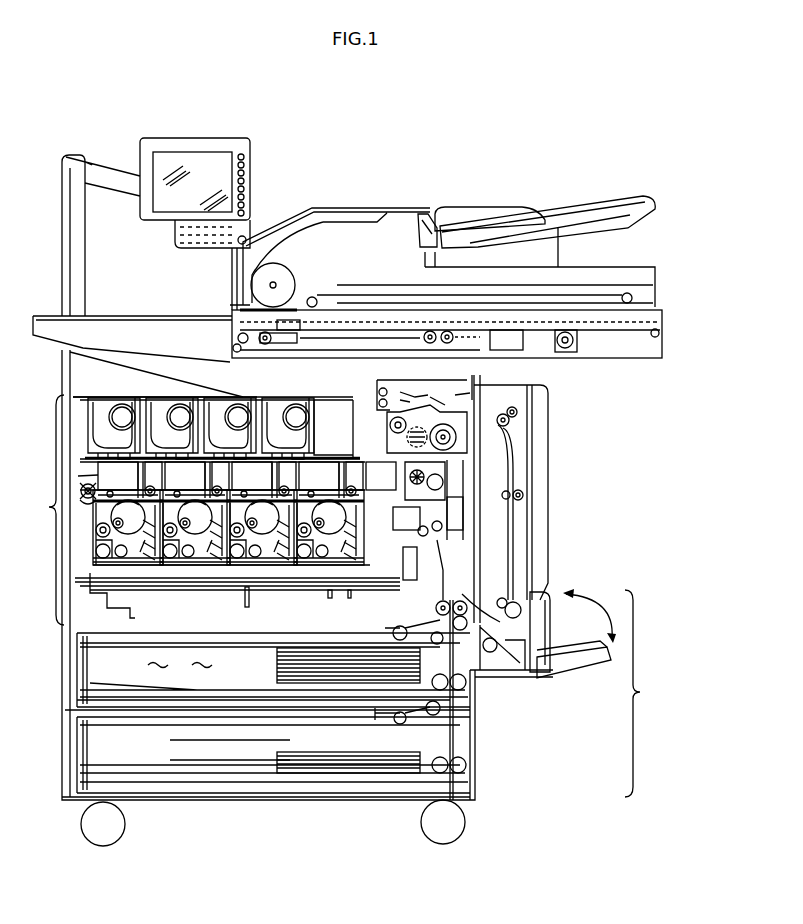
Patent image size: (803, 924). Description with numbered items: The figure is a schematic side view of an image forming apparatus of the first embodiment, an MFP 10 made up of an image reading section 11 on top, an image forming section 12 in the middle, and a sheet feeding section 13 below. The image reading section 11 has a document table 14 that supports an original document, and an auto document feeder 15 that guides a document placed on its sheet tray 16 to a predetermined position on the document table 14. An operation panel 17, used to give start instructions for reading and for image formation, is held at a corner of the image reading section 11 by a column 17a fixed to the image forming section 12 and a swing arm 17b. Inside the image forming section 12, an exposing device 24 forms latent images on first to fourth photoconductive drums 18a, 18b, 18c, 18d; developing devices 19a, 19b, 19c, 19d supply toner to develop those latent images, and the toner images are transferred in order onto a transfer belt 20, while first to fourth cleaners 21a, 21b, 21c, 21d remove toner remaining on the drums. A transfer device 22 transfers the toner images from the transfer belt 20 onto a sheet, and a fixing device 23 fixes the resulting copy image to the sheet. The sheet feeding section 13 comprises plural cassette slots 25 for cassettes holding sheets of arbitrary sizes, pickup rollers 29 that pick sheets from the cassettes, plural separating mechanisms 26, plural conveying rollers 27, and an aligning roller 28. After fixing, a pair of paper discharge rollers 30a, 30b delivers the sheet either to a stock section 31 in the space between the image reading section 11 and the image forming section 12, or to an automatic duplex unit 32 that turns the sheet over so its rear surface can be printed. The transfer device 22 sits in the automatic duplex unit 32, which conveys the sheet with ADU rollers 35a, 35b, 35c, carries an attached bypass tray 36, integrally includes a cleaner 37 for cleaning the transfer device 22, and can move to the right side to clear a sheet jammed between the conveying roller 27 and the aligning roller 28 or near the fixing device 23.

The MFP 10 is at (582, 447).
The image reading section 11 is at (674, 330).
The image forming section 12 is at (39, 510).
The sheet feeding section 13 is at (568, 693).
The document table 14 is at (388, 310).
The auto document feeder 15 is at (472, 190).
The sheet tray 16 is at (603, 218).
The operation panel 17 is at (252, 160).
The column 17a is at (87, 262).
The swing arm 17b is at (101, 170).
The first photoconductive drum 18a is at (330, 535).
The second photoconductive drum 18b is at (262, 535).
The third photoconductive drum 18c is at (198, 535).
The fourth photoconductive drum 18d is at (130, 535).
The developing device 19a is at (306, 545).
The developing device 19b is at (240, 540).
The developing device 19c is at (178, 540).
The developing device 19d is at (117, 540).
The transfer belt 20 is at (434, 476).
The first cleaner 21a is at (366, 515).
The second cleaner 21b is at (331, 476).
The third cleaner 21c is at (264, 476).
The fourth cleaner 21d is at (197, 476).
The transfer device 22 is at (97, 491).
The fixing device 23 is at (424, 406).
The exposing device 24 is at (245, 622).
The cassette slots 25 is at (153, 812).
The separating mechanisms 26 is at (430, 632).
The conveying rollers 27 is at (460, 603).
The aligning roller 28 is at (431, 542).
The pickup rollers 29 is at (400, 625).
The paper discharge roller 30a is at (385, 388).
The paper discharge roller 30b is at (388, 400).
The stock section 31 is at (143, 360).
The automatic duplex unit 32 is at (568, 488).
The ADU roller 35a is at (501, 432).
The ADU roller 35b is at (518, 518).
The ADU roller 35c is at (515, 587).
The bypass tray 36 is at (606, 666).
The cleaner 37 is at (450, 520).